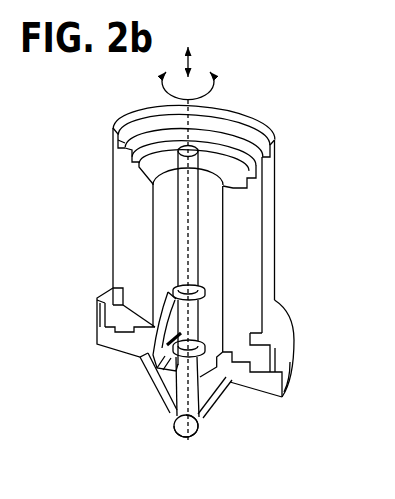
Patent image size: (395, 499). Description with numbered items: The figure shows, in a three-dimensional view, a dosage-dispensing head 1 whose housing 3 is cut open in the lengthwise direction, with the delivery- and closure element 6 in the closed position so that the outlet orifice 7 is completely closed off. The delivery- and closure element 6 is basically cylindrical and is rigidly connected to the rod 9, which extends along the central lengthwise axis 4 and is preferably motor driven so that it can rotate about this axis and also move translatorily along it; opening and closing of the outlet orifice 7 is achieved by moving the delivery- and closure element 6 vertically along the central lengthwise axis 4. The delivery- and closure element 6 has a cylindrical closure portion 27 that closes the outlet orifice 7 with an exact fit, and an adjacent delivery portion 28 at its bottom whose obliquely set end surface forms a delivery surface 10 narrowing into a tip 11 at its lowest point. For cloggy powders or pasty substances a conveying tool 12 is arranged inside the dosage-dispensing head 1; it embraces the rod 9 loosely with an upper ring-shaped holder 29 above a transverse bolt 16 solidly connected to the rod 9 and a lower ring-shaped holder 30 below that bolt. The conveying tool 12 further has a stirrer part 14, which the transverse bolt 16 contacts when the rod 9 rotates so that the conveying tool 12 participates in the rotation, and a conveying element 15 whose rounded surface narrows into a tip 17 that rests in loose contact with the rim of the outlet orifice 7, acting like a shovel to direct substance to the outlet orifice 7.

The dosage-dispensing head 1 is at (291, 121).
The housing 3 is at (89, 347).
The central lengthwise axis 4 is at (191, 100).
The delivery- and closure element 6 is at (173, 417).
The outlet orifice 7 is at (200, 430).
The rod 9 is at (182, 242).
The delivery surface 10 is at (181, 428).
The tip 11 is at (191, 437).
The conveying tool 12 is at (154, 306).
The stirrer part 14 is at (100, 303).
The conveying element 15 is at (199, 398).
The transverse bolt 16 is at (197, 338).
The tip 17 is at (203, 425).
The closure portion 27 is at (169, 412).
The delivery portion 28 is at (178, 428).
The upper ring-shaped holder 29 is at (196, 291).
The lower ring-shaped holder 30 is at (206, 352).